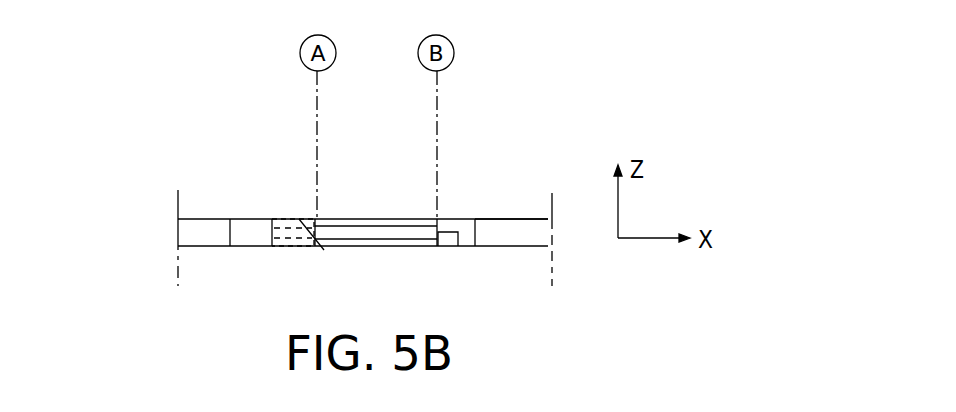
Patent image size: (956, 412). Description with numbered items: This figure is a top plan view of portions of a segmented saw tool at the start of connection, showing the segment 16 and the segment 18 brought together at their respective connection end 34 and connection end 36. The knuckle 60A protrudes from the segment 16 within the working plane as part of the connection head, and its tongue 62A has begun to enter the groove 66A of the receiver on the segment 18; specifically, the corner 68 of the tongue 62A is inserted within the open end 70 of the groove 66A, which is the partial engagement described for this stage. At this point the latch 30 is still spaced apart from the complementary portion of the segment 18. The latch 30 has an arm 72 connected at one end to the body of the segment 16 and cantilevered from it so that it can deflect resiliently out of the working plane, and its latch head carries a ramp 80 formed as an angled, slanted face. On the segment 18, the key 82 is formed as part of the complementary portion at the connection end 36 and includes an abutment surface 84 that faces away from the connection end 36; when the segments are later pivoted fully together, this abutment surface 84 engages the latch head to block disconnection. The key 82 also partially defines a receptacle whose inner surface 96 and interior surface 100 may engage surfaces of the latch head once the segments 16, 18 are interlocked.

The connection end 36 is at (203, 76).
The connection end 34 is at (466, 134).
The segment 18 is at (185, 229).
The inner surface 96 is at (236, 226).
The interior surface 100 is at (250, 230).
The groove 66A is at (286, 208).
The abutment surface 84 is at (270, 247).
The key 82 is at (285, 247).
The open end 70 is at (324, 250).
The corner 68 is at (319, 219).
The tongue 62A is at (384, 219).
The knuckle 60A is at (390, 247).
The latch 30 is at (485, 219).
The ramp 80 is at (448, 247).
The arm 72 is at (503, 235).
The segment 16 is at (532, 218).